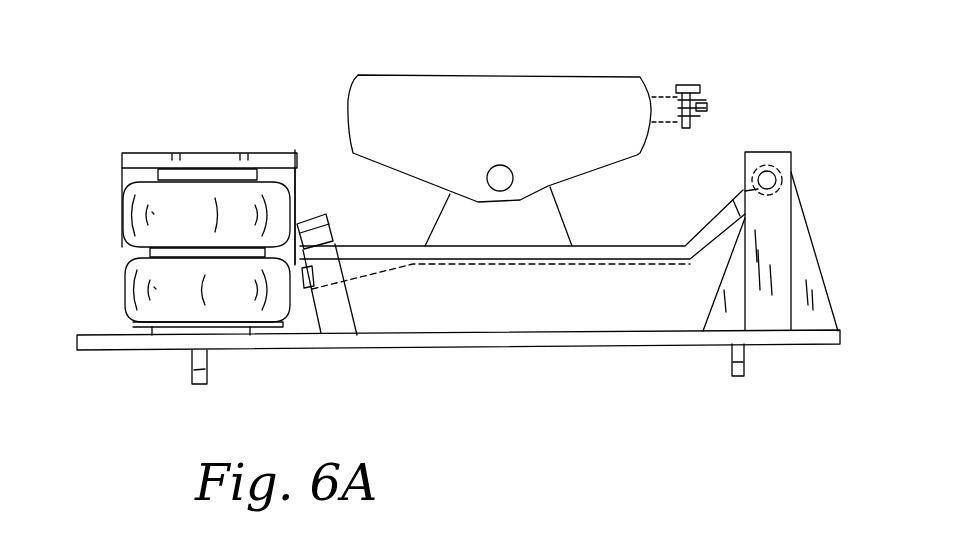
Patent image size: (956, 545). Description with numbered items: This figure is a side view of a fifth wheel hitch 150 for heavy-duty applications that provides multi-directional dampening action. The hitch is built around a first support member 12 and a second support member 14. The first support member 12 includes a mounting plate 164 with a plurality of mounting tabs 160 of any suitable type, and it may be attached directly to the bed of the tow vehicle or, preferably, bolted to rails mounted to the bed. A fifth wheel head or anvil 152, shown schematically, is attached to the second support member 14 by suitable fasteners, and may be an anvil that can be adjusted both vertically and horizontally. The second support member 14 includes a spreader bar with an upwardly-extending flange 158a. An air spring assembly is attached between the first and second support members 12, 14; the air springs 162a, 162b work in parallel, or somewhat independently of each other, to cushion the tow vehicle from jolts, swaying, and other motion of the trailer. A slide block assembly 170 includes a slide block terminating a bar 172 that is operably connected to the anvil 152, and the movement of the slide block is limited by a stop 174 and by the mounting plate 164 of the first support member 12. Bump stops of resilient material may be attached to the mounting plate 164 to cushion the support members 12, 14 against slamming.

The fifth wheel hitch 150 is at (231, 61).
The anvil 152 is at (495, 77).
The upwardly-extending flange 158a is at (190, 152).
The air spring 162b is at (117, 205).
The air spring 162a is at (118, 300).
The stop 174 is at (305, 215).
The slide block assembly 170 is at (373, 228).
The bar 172 is at (378, 273).
The mounting plate 164 is at (368, 349).
The second support member 14 is at (641, 240).
The first support member 12 is at (573, 349).
The mounting tabs 160 is at (191, 377).